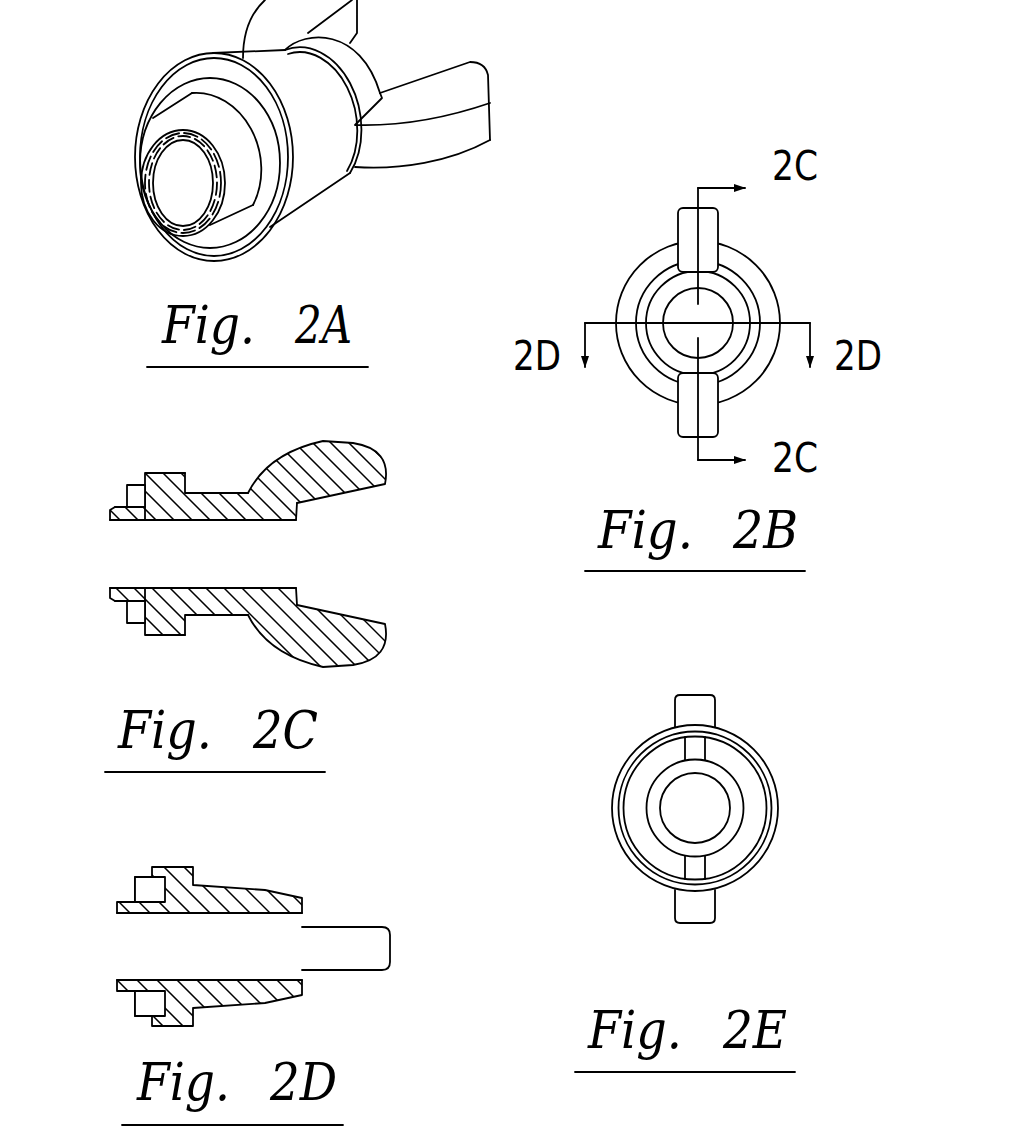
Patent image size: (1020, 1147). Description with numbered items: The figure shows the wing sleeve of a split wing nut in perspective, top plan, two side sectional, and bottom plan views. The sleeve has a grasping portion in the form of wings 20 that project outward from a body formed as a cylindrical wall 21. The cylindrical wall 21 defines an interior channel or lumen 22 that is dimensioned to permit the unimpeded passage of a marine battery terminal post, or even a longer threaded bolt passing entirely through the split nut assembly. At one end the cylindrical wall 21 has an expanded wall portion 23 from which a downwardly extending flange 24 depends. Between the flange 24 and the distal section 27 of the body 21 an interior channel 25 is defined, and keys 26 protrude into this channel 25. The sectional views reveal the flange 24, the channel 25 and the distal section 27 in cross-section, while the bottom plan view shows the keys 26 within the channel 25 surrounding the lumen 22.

In FIG. 2A, the wings 20 is at (490, 90).
In FIG. 2B, the wings 20 is at (682, 215).
In FIG. 2C, the wings 20 is at (323, 441).
In FIG. 2D, the wings 20 is at (362, 928).
In FIG. 2E, the wings 20 is at (715, 918).
In FIG. 2A, the cylindrical wall 21 is at (332, 105).
In FIG. 2B, the cylindrical wall 21 is at (737, 283).
In FIG. 2C, the cylindrical wall 21 is at (205, 491).
In FIG. 2D, the cylindrical wall 21 is at (237, 887).
In FIG. 2A, the interior channel or lumen 22 is at (185, 192).
In FIG. 2B, the interior channel or lumen 22 is at (680, 305).
In FIG. 2C, the interior channel or lumen 22 is at (200, 569).
In FIG. 2D, the interior channel or lumen 22 is at (200, 965).
In FIG. 2E, the interior channel or lumen 22 is at (679, 823).
In FIG. 2A, the expanded wall portion 23 is at (187, 72).
In FIG. 2B, the expanded wall portion 23 is at (777, 293).
In FIG. 2C, the expanded wall portion 23 is at (158, 473).
In FIG. 2E, the expanded wall portion 23 is at (778, 807).
In FIG. 2A, the downwardly extending flange 24 is at (200, 245).
In FIG. 2C, the downwardly extending flange 24 is at (128, 485).
In FIG. 2E, the downwardly extending flange 24 is at (753, 762).
In FIG. 2C, the interior channel 25 is at (126, 497).
In FIG. 2E, the interior channel 25 is at (727, 758).
In FIG. 2E, the keys 26 is at (690, 752).
In FIG. 2C, the distal section 27 is at (125, 590).